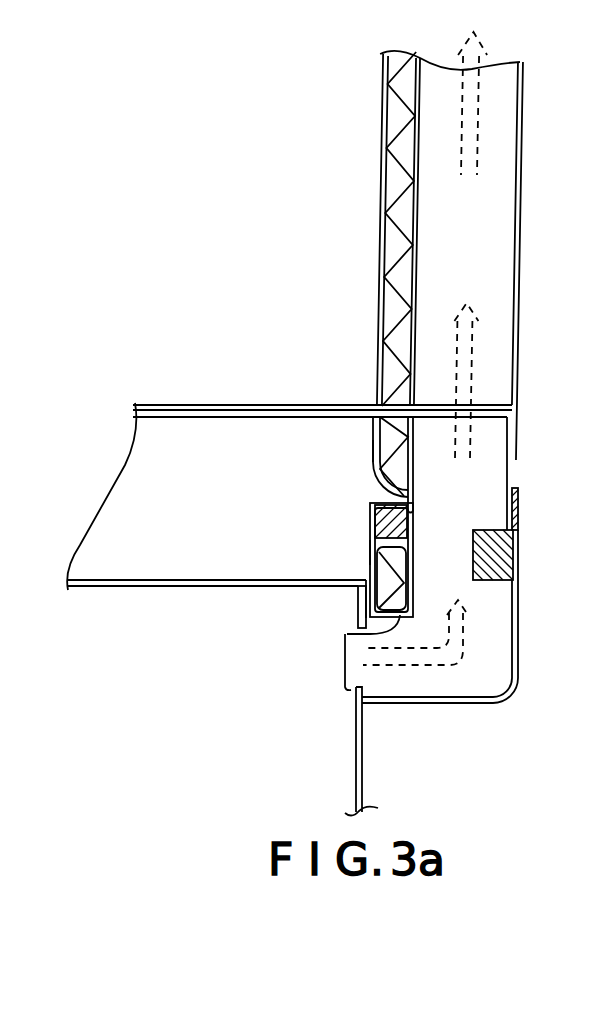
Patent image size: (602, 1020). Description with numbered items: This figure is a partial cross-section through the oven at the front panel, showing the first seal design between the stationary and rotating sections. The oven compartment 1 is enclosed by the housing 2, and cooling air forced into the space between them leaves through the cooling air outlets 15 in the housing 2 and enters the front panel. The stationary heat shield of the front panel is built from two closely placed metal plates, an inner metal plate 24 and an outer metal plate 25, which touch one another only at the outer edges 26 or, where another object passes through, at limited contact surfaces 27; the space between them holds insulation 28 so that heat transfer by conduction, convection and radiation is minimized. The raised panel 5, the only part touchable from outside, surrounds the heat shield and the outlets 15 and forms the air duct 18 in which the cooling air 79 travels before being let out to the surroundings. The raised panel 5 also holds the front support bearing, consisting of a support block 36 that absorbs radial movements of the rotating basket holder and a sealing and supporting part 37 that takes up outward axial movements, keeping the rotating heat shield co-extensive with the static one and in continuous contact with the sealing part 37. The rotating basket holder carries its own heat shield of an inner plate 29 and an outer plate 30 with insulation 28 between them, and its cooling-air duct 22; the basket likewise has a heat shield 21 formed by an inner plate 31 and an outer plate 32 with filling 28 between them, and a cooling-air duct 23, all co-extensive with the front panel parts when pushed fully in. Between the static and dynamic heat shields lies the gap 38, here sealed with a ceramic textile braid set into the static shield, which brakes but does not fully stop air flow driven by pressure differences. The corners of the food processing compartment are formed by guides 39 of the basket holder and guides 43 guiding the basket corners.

The oven compartment 1 is at (332, 587).
The housing 2 is at (358, 734).
The raised panel 5 is at (519, 645).
The cooling air outlets 15 is at (345, 657).
The air duct 18 is at (483, 222).
The heat shield of the basket 21 is at (400, 435).
The cooling-air duct of the basket holder 22 is at (510, 485).
The cooling-air duct of the basket 23 is at (518, 250).
The inner metal plate 24 is at (373, 526).
The outer metal plate 25 is at (407, 592).
The outer edges 26 is at (350, 632).
The contact surfaces 27 is at (373, 552).
The insulation 28 is at (380, 362).
The inner plate of the basket holder heat shield 29 is at (377, 468).
The outer plate of the basket holder heat shield 30 is at (410, 490).
The inner plate of the basket heat shield 31 is at (379, 304).
The outer plate of the basket heat shield 32 is at (417, 181).
The support block 36 is at (497, 572).
The sealing and supporting part 37 is at (519, 512).
The gap 38 is at (375, 500).
The guides 39 is at (323, 406).
The guides 43 is at (365, 407).
The cooling air 79 is at (478, 102).